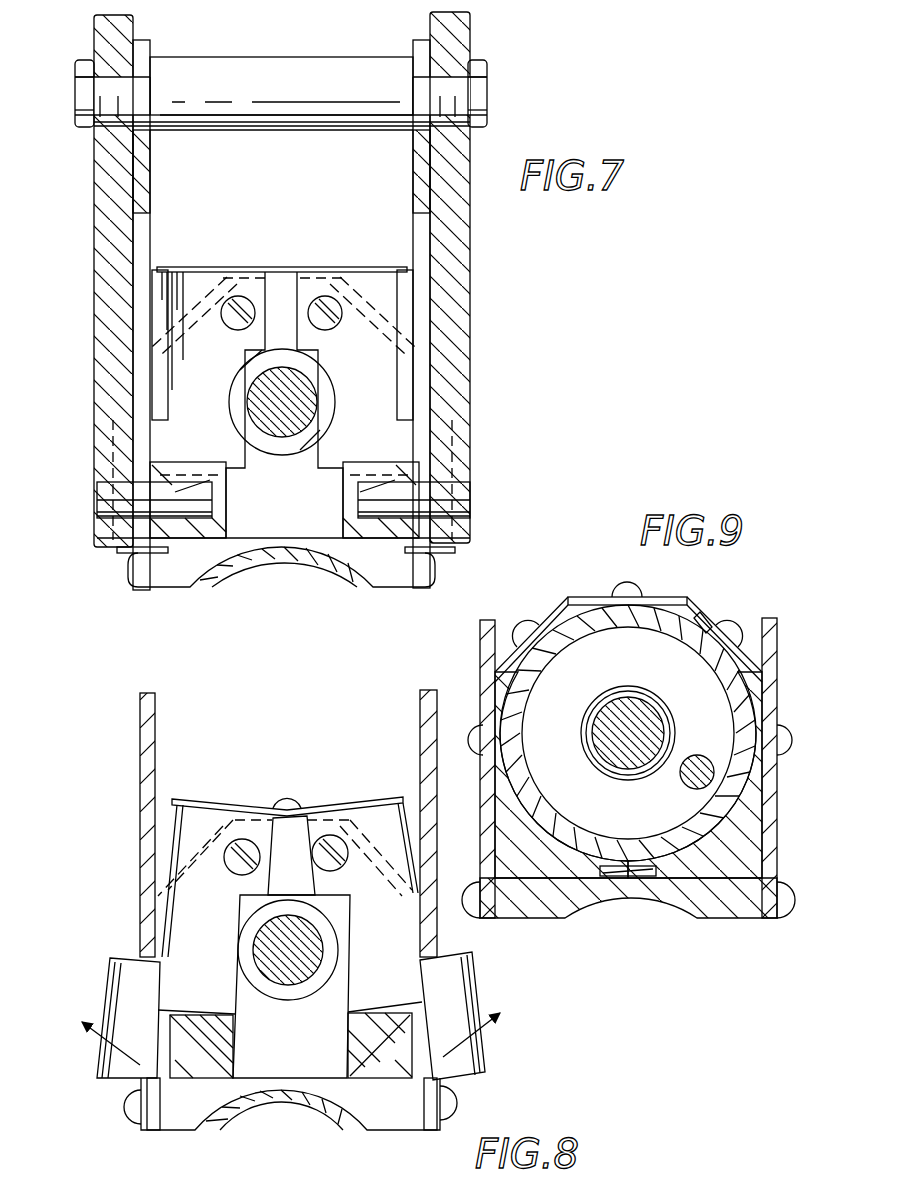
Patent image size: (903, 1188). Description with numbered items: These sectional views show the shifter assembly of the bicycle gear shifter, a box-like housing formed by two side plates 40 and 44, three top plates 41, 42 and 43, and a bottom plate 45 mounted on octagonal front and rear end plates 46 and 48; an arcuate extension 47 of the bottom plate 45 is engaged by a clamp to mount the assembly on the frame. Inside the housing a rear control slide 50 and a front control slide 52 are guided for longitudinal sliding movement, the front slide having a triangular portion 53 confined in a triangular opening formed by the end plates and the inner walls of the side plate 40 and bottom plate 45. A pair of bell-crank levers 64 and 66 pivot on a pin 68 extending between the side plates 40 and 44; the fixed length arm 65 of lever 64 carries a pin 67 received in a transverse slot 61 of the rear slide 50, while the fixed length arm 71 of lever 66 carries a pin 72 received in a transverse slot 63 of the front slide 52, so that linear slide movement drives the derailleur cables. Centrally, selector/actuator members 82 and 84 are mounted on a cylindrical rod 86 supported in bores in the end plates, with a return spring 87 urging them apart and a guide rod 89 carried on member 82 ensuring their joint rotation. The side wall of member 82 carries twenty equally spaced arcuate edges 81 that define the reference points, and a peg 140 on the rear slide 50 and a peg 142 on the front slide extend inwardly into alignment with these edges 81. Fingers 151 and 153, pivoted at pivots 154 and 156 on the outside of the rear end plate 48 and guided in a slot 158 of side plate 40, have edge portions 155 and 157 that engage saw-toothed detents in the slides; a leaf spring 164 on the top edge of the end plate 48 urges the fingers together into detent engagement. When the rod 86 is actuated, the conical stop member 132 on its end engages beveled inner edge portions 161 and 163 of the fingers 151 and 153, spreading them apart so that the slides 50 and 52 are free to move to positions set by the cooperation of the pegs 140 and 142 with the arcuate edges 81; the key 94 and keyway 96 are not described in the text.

In FIG. 7, the side plate 40 is at (140, 152).
In FIG. 8, the side plate 40 is at (150, 740).
In FIG. 7, the top plate 41 is at (158, 345).
In FIG. 9, the top plate 41 is at (548, 618).
In FIG. 7, the top plate 42 is at (330, 278).
In FIG. 9, the top plate 42 is at (669, 598).
In FIG. 7, the top plate 43 is at (418, 345).
In FIG. 9, the top plate 43 is at (708, 628).
In FIG. 7, the side plate 44 is at (420, 152).
In FIG. 8, the side plate 44 is at (420, 736).
In FIG. 9, the side plate 44 is at (778, 640).
In FIG. 7, the bottom plate 45 is at (172, 580).
In FIG. 9, the bottom plate 45 is at (718, 907).
In FIG. 9, the front end plate 46 is at (690, 620).
In FIG. 7, the arcuate extension 47 is at (345, 570).
In FIG. 7, the rear end plate 48 is at (282, 288).
In FIG. 8, the rear end plate 48 is at (295, 832).
In FIG. 7, the rear control slide 50 is at (328, 487).
In FIG. 9, the rear control slide 50 is at (745, 882).
In FIG. 7, the front control slide 52 is at (240, 487).
In FIG. 8, the front control slide 52 is at (192, 1096).
In FIG. 9, the front control slide 52 is at (503, 834).
In FIG. 8, the triangular portion 53 is at (248, 1080).
In FIG. 7, the transverse slot 61 is at (345, 506).
In FIG. 7, the transverse slot 63 is at (225, 506).
In FIG. 7, the bell-crank lever 64 is at (470, 38).
In FIG. 7, the fixed length arm 65 is at (472, 384).
In FIG. 7, the bell-crank lever 66 is at (96, 45).
In FIG. 7, the pin 67 is at (460, 492).
In FIG. 7, the pin 68 is at (372, 62).
In FIG. 7, the fixed length arm 71 is at (102, 236).
In FIG. 7, the pin 72 is at (105, 497).
In FIG. 9, the arcuate edges 81 is at (683, 628).
In FIG. 9, the selector/actuator member 82 is at (580, 618).
In FIG. 9, the selector/actuator member 84 is at (608, 640).
In FIG. 8, the cylindrical rod 86 is at (312, 953).
In FIG. 9, the cylindrical rod 86 is at (648, 718).
In FIG. 9, the return spring 87 is at (612, 700).
In FIG. 9, the guide rod 89 is at (704, 760).
In FIG. 9, the key 94 is at (662, 872).
In FIG. 9, the keyway 96 is at (602, 880).
In FIG. 8, the stop member 132 is at (300, 990).
In FIG. 9, the peg 140 is at (707, 812).
In FIG. 9, the peg 142 is at (556, 820).
In FIG. 8, the finger 151 is at (480, 988).
In FIG. 8, the finger 153 is at (108, 965).
In FIG. 7, the pivot 154 is at (336, 314).
In FIG. 8, the pivot 154 is at (340, 870).
In FIG. 8, the inner edge portion 155 is at (440, 1092).
In FIG. 7, the pivot 156 is at (232, 322).
In FIG. 8, the pivot 156 is at (236, 872).
In FIG. 8, the edge portion 157 is at (160, 1058).
In FIG. 8, the slot 158 is at (150, 1112).
In FIG. 8, the beveled inner edge portion 161 is at (350, 998).
In FIG. 8, the beveled inner edge portion 163 is at (228, 1005).
In FIG. 7, the leaf spring 164 is at (190, 270).
In FIG. 8, the leaf spring 164 is at (240, 788).